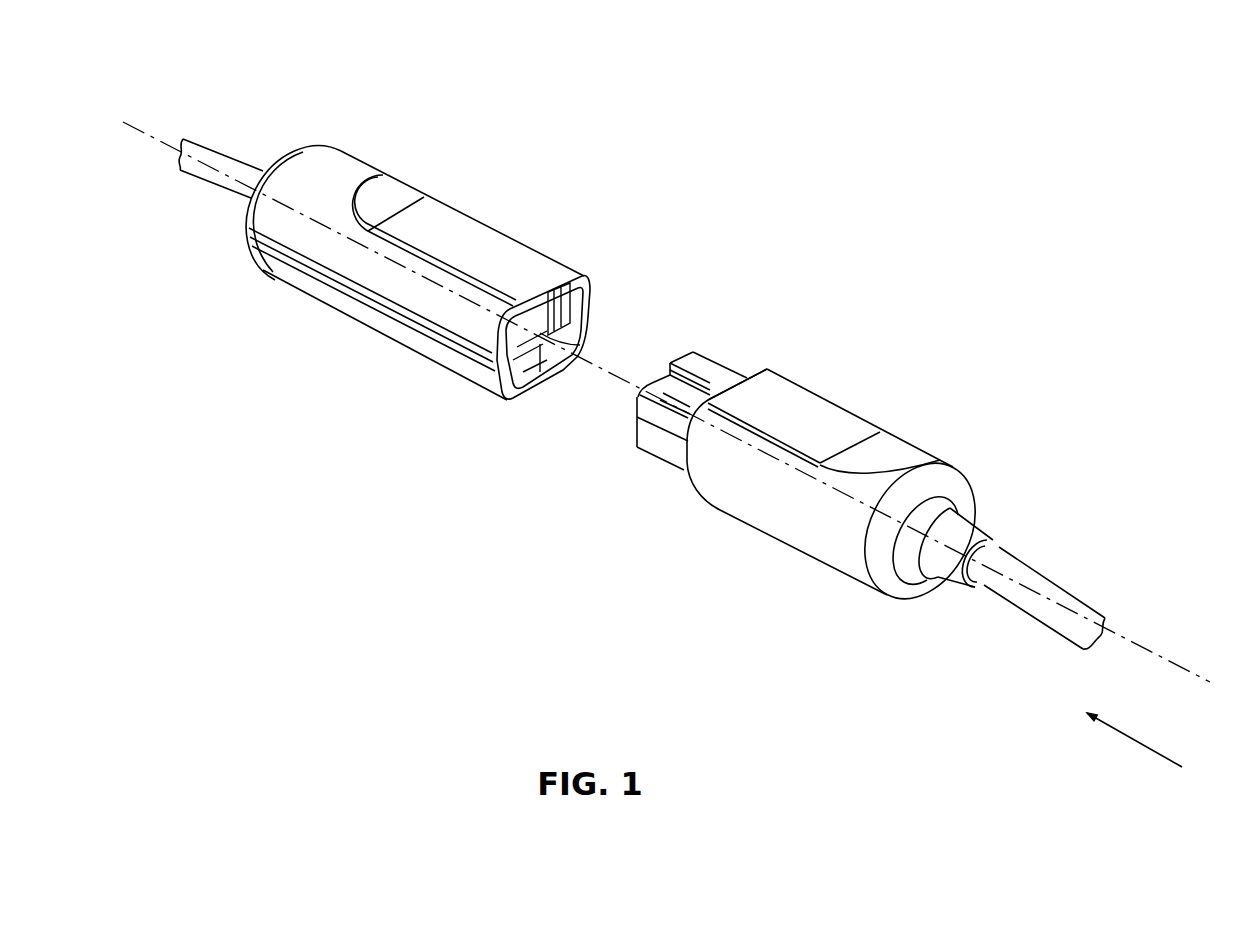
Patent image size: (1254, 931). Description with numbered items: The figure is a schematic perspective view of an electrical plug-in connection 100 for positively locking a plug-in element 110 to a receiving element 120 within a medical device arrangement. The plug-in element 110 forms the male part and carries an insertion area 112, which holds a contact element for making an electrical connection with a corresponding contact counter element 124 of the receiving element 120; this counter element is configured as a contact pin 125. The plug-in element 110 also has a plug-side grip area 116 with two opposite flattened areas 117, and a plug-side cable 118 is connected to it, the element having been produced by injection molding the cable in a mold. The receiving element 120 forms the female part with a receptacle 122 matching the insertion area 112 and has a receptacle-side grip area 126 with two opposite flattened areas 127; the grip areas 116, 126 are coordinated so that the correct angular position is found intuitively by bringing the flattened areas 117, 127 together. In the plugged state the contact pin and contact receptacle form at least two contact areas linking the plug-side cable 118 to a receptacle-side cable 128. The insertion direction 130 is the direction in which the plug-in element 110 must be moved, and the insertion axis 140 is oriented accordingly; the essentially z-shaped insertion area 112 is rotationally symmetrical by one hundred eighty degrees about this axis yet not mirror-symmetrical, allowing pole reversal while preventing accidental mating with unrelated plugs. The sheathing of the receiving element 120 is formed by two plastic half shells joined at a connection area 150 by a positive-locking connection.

The electrical plug-in connection 100 is at (975, 170).
The plug-in element 110 is at (778, 556).
The insertion area 112 is at (681, 353).
The plug-side grip area 116 is at (818, 380).
The flattened areas 117 is at (828, 420).
The plug-side cable 118 is at (1017, 577).
The receiving element 120 is at (393, 356).
The receptacle 122 is at (547, 380).
The contact counter element 124 is at (585, 308).
The contact pin 125 is at (548, 351).
The receptacle-side grip area 126 is at (478, 207).
The flattened areas 127 is at (490, 245).
The receptacle-side cable 128 is at (222, 162).
The insertion direction 130 is at (1132, 740).
The insertion axis 140 is at (1148, 650).
The connection area 150 is at (297, 290).